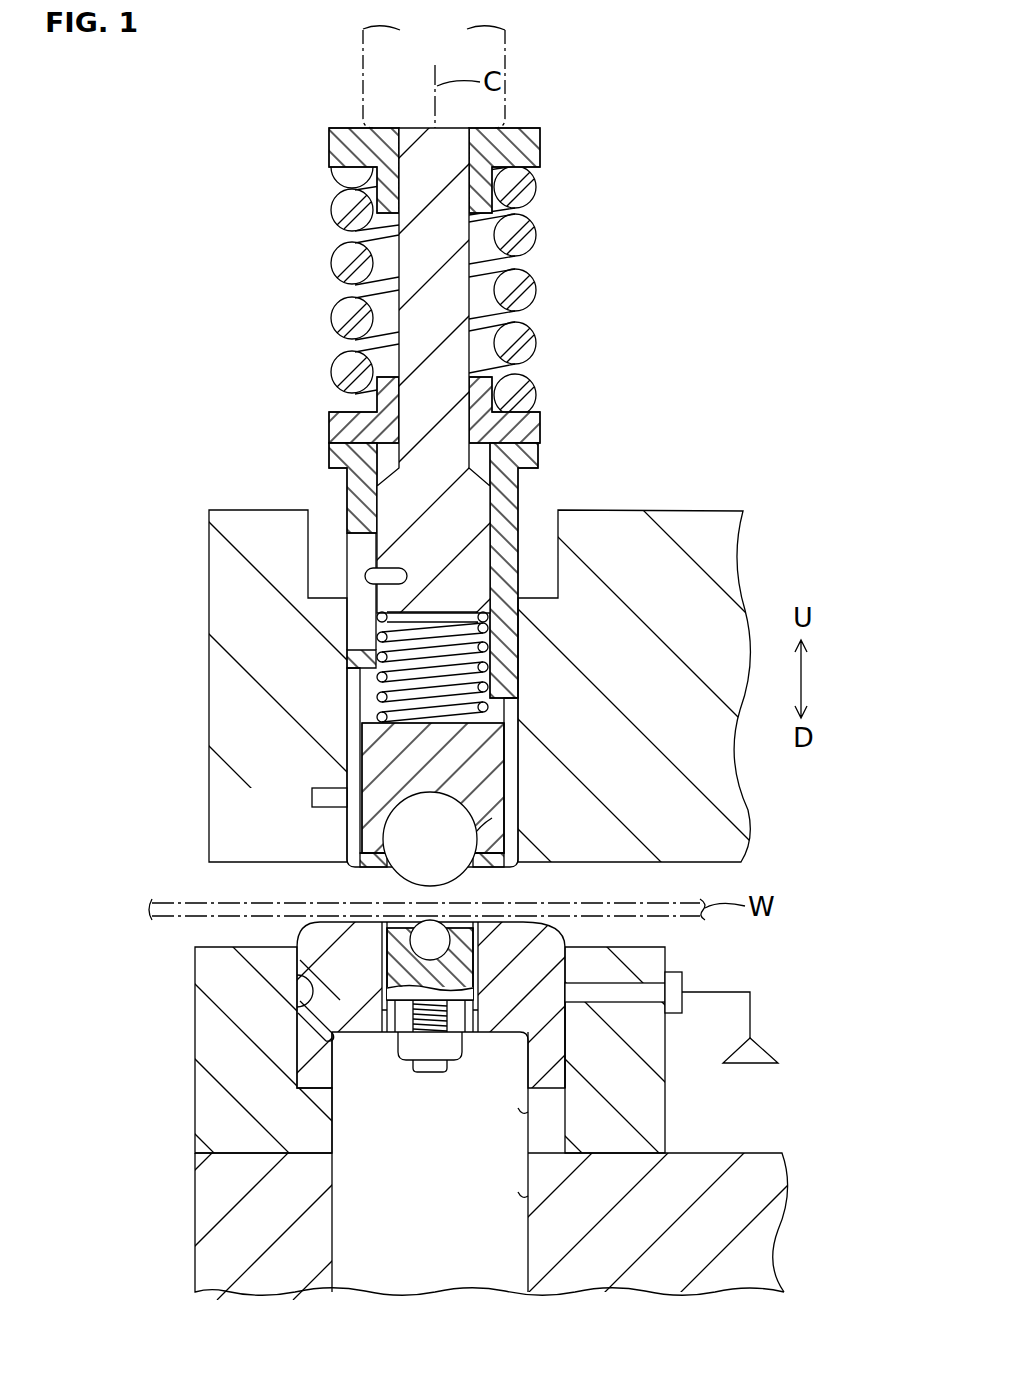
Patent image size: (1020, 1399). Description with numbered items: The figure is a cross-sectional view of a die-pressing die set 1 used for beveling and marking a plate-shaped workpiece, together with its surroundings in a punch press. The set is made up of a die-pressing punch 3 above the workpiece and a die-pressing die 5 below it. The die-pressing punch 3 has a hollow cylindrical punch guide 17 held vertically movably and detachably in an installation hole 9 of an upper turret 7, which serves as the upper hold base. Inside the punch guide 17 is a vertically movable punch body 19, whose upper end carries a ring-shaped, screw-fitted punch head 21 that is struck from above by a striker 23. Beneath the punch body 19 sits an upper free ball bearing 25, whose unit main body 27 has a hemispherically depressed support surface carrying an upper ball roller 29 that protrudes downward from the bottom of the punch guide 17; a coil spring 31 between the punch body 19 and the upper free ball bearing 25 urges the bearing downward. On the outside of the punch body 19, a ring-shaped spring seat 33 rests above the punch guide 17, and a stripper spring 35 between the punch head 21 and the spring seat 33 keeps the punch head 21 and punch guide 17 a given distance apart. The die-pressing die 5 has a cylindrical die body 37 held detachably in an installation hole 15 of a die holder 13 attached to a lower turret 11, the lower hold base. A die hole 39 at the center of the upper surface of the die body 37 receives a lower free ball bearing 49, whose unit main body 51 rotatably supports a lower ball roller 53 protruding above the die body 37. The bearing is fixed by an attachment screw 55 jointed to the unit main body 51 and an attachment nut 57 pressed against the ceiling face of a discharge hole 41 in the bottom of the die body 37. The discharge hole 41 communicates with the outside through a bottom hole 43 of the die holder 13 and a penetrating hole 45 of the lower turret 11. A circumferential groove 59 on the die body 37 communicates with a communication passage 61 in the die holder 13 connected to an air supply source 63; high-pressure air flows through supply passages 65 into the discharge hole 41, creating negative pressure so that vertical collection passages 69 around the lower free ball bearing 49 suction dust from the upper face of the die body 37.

The die-pressing die set 1 is at (100, 723).
The die-pressing punch 3 is at (296, 748).
The die-pressing die 5 is at (272, 1029).
The upper turret 7 is at (697, 510).
The installation hole 9 is at (506, 648).
The lower turret 11 is at (748, 1153).
The die holder 13 is at (660, 1040).
The installation hole 15 is at (553, 1044).
The punch guide 17 is at (508, 575).
The punch body 19 is at (452, 497).
The punch head 21 is at (540, 152).
The striker 23 is at (503, 48).
The upper free ball bearing 25 is at (518, 768).
The unit main body 27 is at (490, 806).
The upper ball roller 29 is at (444, 853).
The coil spring 31 is at (484, 687).
The spring seat 33 is at (540, 430).
The stripper spring 35 is at (533, 227).
The die body 37 is at (553, 932).
The die hole 39 is at (397, 962).
The discharge hole 41 is at (347, 1067).
The bottom hole 43 is at (520, 1112).
The penetrating hole 45 is at (520, 1195).
The lower free ball bearing 49 is at (500, 976).
The unit main body 51 is at (472, 955).
The lower ball roller 53 is at (433, 924).
The attachment screw 55 is at (428, 1073).
The attachment nut 57 is at (462, 1056).
The circumferential groove 59 is at (297, 990).
The communication passage 61 is at (657, 987).
The air supply source 63 is at (760, 1048).
The supply passages 65 is at (318, 1020).
The collection passages 69 is at (388, 1023).